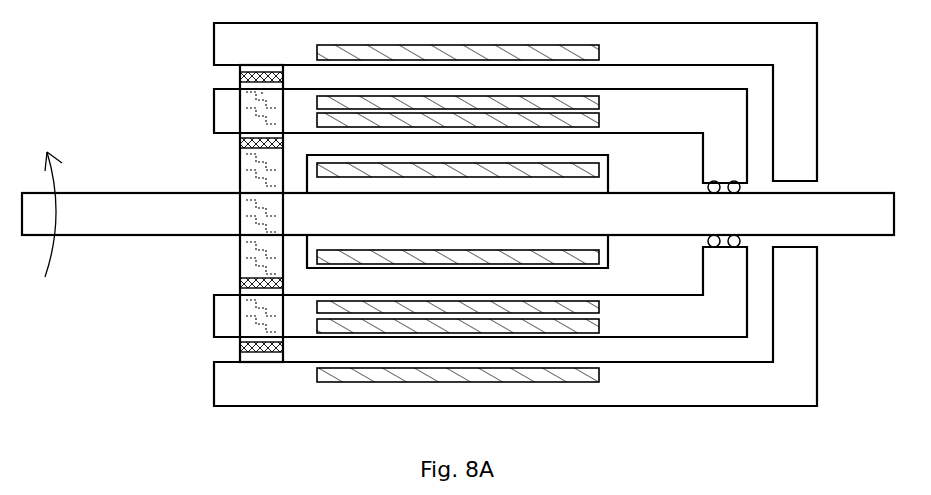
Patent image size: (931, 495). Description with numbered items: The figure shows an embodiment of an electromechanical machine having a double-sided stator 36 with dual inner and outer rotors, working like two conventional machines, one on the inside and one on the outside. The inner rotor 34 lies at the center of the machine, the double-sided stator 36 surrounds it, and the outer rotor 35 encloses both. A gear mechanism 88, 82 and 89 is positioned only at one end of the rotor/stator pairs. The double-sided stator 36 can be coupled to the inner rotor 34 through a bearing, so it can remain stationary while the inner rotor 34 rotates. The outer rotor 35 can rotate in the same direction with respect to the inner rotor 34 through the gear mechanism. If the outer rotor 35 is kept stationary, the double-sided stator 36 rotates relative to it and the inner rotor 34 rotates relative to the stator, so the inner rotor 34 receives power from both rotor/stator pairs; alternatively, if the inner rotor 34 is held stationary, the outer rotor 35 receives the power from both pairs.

The outer rotor 35 is at (700, 60).
The double-sided stator 36 is at (690, 126).
The inner rotor 34 is at (688, 226).
The gear mechanism 82 is at (253, 312).
The gear mechanism 88 is at (255, 246).
The gear mechanism 89 is at (257, 360).